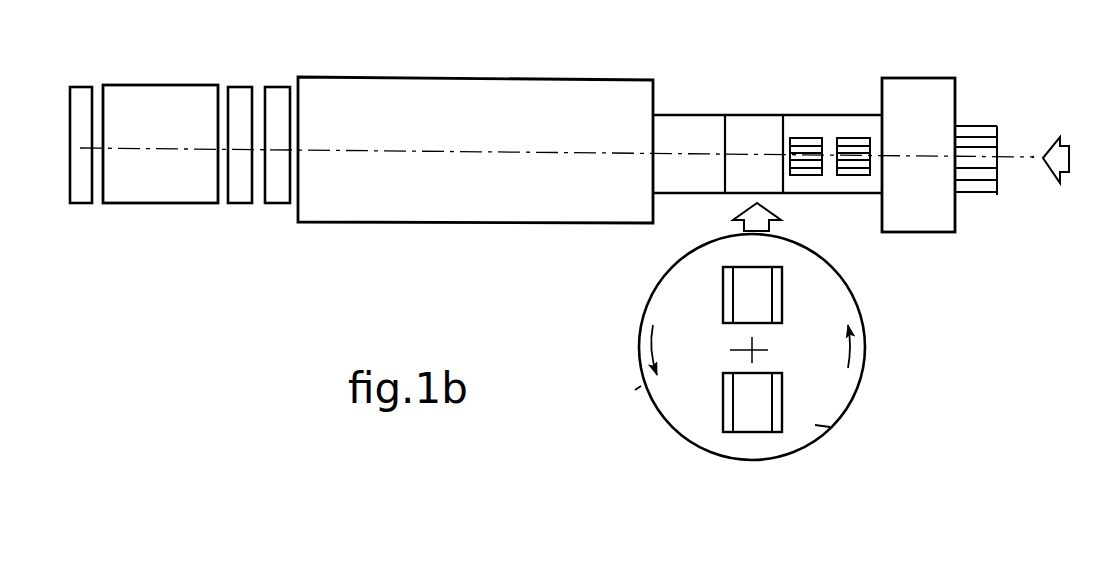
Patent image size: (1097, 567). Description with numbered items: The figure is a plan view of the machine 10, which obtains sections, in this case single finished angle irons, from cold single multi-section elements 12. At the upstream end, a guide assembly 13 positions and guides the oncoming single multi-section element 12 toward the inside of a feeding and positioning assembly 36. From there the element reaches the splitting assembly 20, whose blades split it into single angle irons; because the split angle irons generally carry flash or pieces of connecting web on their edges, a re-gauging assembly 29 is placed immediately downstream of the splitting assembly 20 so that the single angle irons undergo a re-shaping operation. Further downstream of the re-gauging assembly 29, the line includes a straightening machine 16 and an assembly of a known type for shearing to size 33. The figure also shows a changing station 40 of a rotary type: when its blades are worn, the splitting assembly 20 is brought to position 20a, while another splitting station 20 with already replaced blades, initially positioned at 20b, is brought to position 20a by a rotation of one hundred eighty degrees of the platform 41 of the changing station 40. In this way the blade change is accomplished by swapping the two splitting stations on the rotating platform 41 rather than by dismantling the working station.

The machine 10 is at (315, 290).
The single multi-section element 12 is at (983, 133).
The guide assembly 13 is at (942, 73).
The straightening machine 16 is at (475, 235).
The splitting assembly 20 is at (706, 195).
The position of splitting assembly 20a is at (784, 302).
The initial position of replacement splitting station 20b is at (717, 392).
The re-gauging assembly 29 is at (678, 110).
The assembly for shearing to size 33 is at (157, 207).
The feeding and positioning assembly 36 is at (857, 110).
The changing station 40 is at (870, 313).
The platform 41 is at (822, 427).